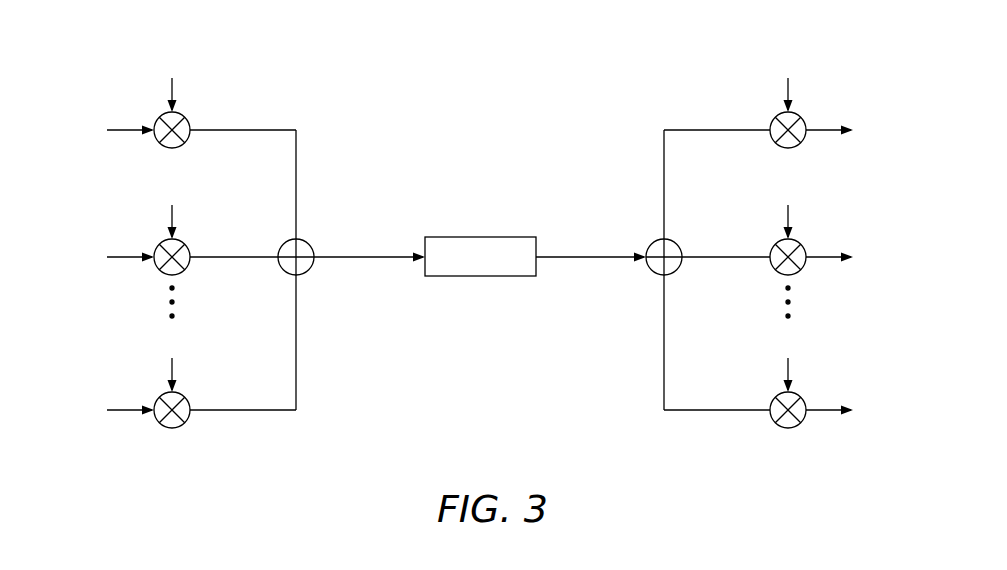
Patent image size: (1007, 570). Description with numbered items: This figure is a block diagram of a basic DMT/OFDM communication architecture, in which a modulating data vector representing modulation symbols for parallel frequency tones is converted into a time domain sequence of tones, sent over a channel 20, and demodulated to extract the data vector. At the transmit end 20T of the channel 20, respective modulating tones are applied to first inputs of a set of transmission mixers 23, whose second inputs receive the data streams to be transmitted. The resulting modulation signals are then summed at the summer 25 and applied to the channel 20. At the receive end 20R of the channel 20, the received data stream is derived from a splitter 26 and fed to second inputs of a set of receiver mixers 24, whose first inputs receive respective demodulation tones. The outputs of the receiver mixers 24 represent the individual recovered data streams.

The channel 20 is at (481, 237).
The transmit end 20T is at (148, 443).
The receive end 20R is at (812, 443).
The transmission mixers 23 is at (185, 117).
The receiver mixers 24 is at (800, 117).
The summer 25 is at (308, 270).
The splitter 26 is at (652, 270).